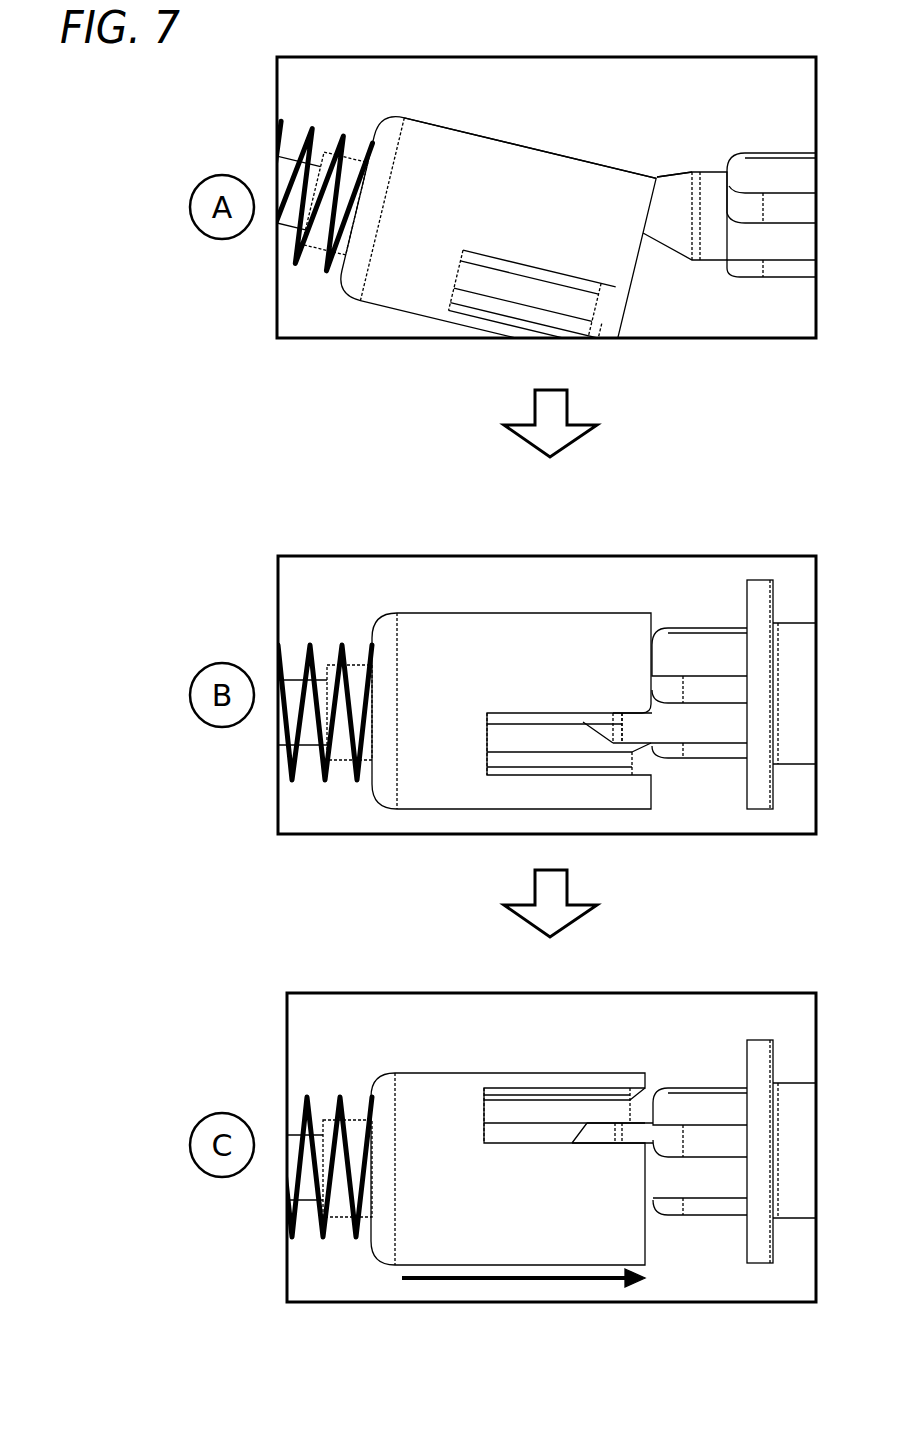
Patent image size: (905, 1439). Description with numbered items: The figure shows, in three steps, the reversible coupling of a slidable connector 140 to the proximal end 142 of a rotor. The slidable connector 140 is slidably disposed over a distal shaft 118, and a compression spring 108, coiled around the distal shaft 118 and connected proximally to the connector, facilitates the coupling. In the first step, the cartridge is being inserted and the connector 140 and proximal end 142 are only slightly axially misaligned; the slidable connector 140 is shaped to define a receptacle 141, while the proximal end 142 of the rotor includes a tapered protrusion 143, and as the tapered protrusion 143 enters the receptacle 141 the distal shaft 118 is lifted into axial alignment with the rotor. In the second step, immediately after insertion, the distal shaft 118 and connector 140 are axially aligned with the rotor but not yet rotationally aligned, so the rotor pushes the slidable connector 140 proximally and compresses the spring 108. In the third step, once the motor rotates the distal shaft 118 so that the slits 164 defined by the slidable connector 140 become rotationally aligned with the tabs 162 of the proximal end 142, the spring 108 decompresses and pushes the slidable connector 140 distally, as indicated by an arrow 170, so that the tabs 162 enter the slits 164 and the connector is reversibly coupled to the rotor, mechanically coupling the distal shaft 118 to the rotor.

The compression spring 108 is at (297, 263).
The distal shaft 118 is at (298, 150).
The slidable connector 140 is at (430, 148).
The receptacle 141 is at (538, 150).
The proximal end of rotor 142 is at (710, 178).
The tapered protrusion 143 is at (669, 180).
The tabs 162 is at (779, 168).
The slits 164 is at (515, 293).
The arrow 170 is at (546, 1282).